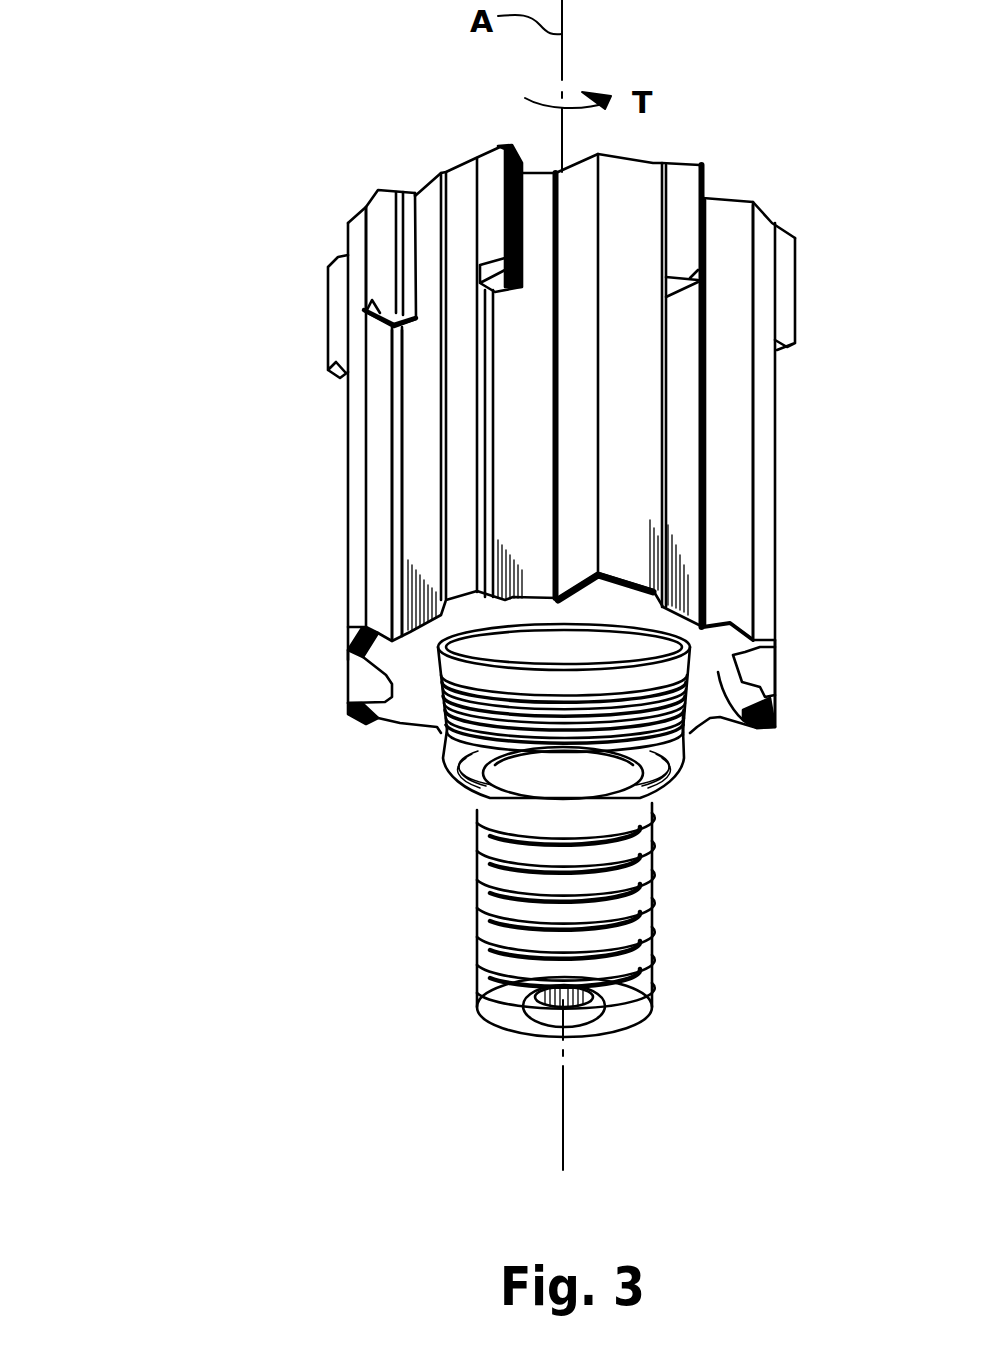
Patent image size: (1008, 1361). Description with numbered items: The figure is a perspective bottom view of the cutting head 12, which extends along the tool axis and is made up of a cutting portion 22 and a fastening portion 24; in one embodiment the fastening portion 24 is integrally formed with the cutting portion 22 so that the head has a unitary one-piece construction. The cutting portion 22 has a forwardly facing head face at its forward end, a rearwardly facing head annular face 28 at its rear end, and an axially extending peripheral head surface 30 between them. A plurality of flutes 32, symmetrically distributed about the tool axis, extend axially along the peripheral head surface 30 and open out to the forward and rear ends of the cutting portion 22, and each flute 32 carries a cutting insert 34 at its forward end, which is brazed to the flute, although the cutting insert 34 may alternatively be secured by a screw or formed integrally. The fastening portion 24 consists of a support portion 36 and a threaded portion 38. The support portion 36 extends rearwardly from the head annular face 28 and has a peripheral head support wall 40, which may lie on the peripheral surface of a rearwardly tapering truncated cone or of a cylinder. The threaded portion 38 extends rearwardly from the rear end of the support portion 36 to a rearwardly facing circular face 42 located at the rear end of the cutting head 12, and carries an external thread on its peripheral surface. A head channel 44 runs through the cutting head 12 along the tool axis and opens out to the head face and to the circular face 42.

The cutting head 12 is at (205, 176).
The cutting portion 22 is at (290, 466).
The fastening portion 24 is at (188, 849).
The head annular face 28 is at (760, 728).
The peripheral head surface 30 is at (733, 507).
The flutes 32 is at (424, 406).
The cutting insert 34 is at (387, 204).
The support portion 36 is at (416, 769).
The threaded portion 38 is at (442, 921).
The peripheral head support wall 40 is at (690, 718).
The circular face 42 is at (515, 1006).
The head channel 44 is at (574, 1000).